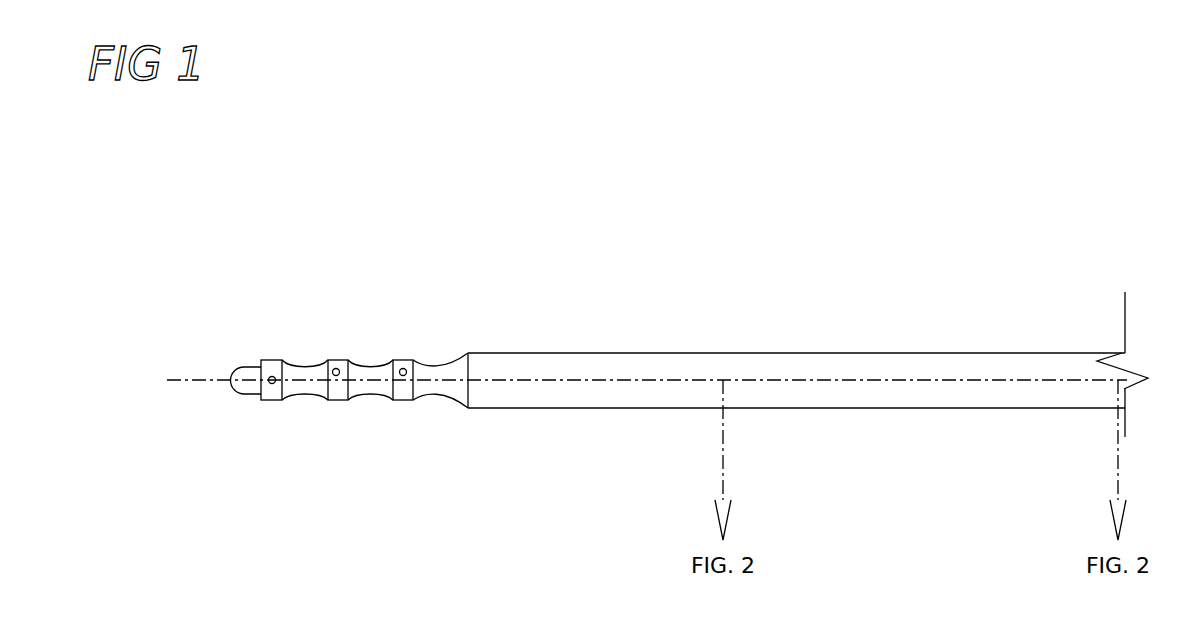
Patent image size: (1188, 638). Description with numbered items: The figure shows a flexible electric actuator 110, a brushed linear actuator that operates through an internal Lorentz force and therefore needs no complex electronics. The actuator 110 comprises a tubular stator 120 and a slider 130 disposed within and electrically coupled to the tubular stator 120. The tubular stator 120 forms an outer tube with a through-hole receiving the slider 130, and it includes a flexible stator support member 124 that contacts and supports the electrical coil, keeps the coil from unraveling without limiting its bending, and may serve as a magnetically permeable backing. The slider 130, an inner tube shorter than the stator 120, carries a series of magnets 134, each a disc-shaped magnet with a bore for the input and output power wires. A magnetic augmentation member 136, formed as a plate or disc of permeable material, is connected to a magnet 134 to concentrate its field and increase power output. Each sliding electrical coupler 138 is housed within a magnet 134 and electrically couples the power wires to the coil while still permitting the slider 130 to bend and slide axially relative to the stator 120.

The flexible electric actuator 110 is at (1010, 123).
The tubular stator 120 is at (888, 354).
The flexible stator support member 124 is at (1008, 352).
The slider 130 is at (435, 358).
The magnet 134 is at (405, 392).
The magnetic augmentation member 136 is at (277, 376).
The sliding electrical coupler 138 is at (400, 370).